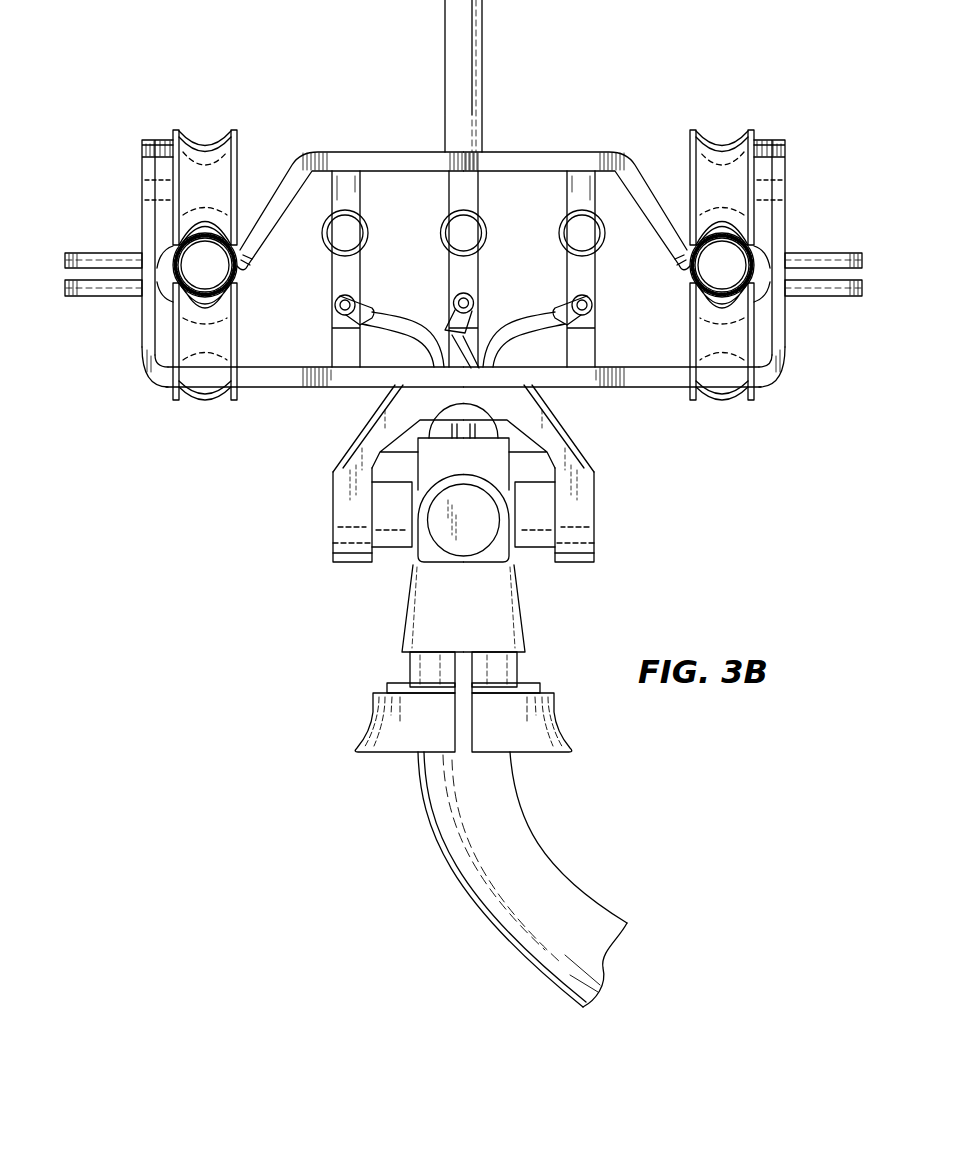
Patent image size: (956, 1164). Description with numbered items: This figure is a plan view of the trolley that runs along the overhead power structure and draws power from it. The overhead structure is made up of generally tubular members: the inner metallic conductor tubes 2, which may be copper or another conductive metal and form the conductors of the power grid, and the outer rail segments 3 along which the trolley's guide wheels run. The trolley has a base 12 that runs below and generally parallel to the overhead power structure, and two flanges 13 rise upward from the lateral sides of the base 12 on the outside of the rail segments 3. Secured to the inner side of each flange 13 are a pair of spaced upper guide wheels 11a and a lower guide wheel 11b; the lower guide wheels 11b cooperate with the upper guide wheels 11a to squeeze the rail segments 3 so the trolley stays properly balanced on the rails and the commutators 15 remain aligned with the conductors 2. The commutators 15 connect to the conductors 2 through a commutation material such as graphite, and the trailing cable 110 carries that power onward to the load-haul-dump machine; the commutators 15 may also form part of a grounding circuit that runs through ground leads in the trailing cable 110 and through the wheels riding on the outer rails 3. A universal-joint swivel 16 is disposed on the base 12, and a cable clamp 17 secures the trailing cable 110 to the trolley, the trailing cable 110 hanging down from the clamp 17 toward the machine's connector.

The conductor 2 is at (365, 218).
The rail segment 3 is at (215, 267).
The upper guide wheel 11a is at (207, 150).
The lower guide wheel 11b is at (202, 345).
The base 12 is at (288, 387).
The flange 13 is at (145, 213).
The commutator 15 is at (357, 311).
The universal joint swivel 16 is at (332, 540).
The cable clamp 17 is at (373, 718).
The trailing cable 110 is at (538, 868).